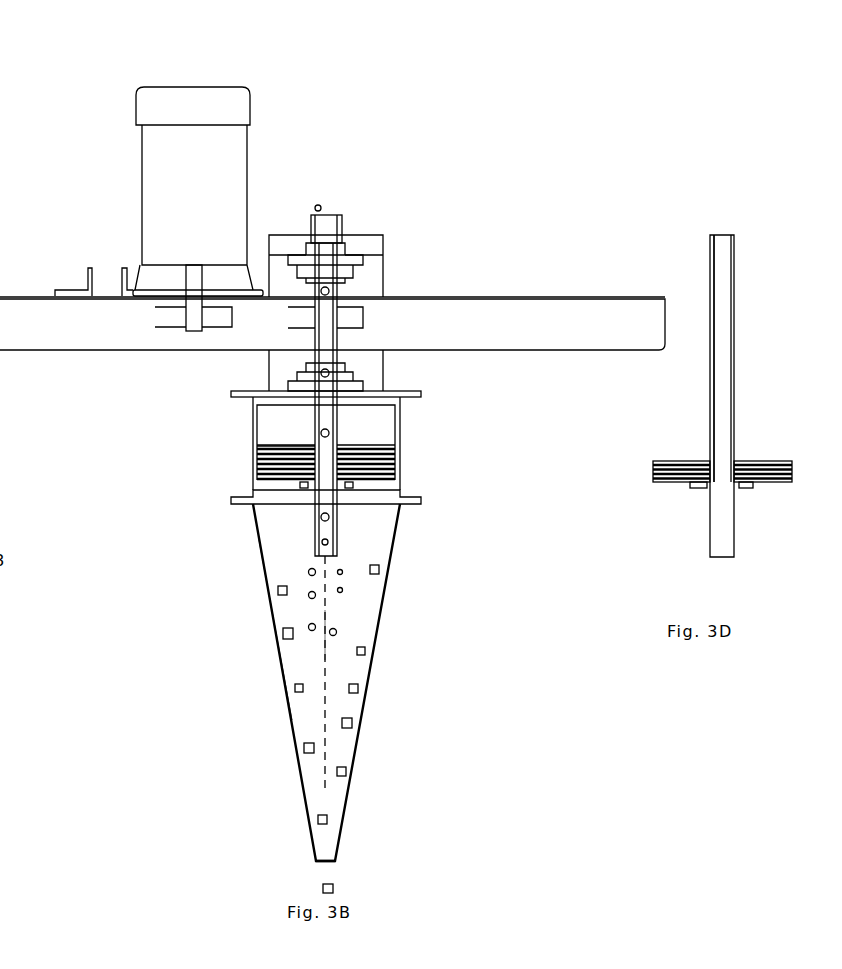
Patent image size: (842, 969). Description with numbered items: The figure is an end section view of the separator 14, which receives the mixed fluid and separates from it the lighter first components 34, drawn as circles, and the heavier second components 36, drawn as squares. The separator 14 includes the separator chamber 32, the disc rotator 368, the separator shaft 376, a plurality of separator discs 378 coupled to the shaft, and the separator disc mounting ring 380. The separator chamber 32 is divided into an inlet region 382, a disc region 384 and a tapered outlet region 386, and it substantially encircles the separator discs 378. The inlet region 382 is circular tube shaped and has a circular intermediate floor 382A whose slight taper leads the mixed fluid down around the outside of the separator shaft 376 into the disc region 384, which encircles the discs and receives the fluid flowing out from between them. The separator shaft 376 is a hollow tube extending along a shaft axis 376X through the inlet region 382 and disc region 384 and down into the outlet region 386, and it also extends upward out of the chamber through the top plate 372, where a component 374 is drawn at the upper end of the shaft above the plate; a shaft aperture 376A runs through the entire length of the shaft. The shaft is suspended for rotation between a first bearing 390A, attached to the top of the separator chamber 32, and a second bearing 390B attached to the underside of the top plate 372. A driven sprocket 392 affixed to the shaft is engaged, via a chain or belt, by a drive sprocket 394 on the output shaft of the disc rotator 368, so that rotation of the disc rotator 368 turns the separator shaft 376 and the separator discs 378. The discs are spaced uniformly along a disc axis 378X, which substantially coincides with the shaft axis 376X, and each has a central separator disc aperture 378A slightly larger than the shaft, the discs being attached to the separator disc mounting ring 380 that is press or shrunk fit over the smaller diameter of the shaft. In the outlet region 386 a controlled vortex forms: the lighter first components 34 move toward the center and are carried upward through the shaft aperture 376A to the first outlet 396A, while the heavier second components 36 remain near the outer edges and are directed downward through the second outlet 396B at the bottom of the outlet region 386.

In FIG. 3B, the separator 14 is at (402, 700).
In FIG. 3B, the separator chamber 32 is at (292, 683).
In FIG. 3B, the first components 34 is at (343, 590).
In FIG. 3B, the second components 36 is at (318, 824).
In FIG. 3B, the disc rotator 368 is at (160, 158).
In FIG. 3B, the top plate 372 is at (376, 239).
In FIG. 3B, the nut 374 is at (347, 217).
In FIG. 3B, the separator shaft 376 is at (338, 542).
In FIG. 3D, the separator shaft 376 is at (708, 537).
In FIG. 3B, the shaft aperture 376A is at (325, 338).
In FIG. 3D, the shaft aperture 376A is at (722, 363).
In FIG. 3B, the shaft axis 376X is at (325, 610).
In FIG. 3B, the separator discs 378 is at (395, 470).
In FIG. 3D, the separator discs 378 is at (662, 458).
In FIG. 3B, the separator disc aperture 378A is at (298, 486).
In FIG. 3D, the separator disc aperture 378A is at (738, 462).
In FIG. 3B, the disc axis 378X is at (323, 653).
In FIG. 3B, the separator disc mounting ring 380 is at (392, 487).
In FIG. 3D, the separator disc mounting ring 380 is at (690, 488).
In FIG. 3B, the inlet region 382 is at (382, 423).
In FIG. 3B, the intermediate floor 382A is at (302, 447).
In FIG. 3B, the disc region 384 is at (253, 469).
In FIG. 3B, the outlet region 386 is at (284, 720).
In FIG. 3B, the first bearing 390A is at (355, 375).
In FIG. 3B, the second bearing 390B is at (353, 265).
In FIG. 3B, the driven sprocket 392 is at (280, 322).
In FIG. 3B, the drive sprocket 394 is at (169, 320).
In FIG. 3B, the first outlet 396A is at (327, 205).
In FIG. 3B, the second outlet 396B is at (324, 868).